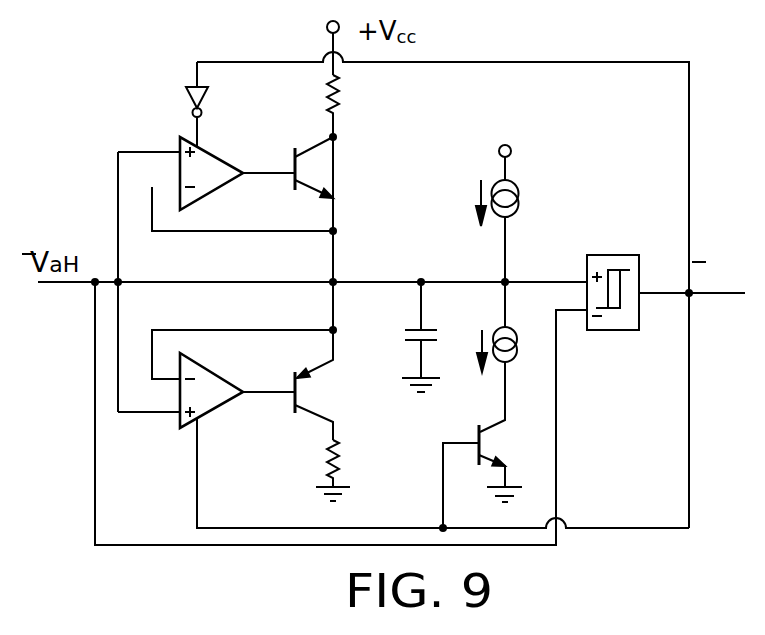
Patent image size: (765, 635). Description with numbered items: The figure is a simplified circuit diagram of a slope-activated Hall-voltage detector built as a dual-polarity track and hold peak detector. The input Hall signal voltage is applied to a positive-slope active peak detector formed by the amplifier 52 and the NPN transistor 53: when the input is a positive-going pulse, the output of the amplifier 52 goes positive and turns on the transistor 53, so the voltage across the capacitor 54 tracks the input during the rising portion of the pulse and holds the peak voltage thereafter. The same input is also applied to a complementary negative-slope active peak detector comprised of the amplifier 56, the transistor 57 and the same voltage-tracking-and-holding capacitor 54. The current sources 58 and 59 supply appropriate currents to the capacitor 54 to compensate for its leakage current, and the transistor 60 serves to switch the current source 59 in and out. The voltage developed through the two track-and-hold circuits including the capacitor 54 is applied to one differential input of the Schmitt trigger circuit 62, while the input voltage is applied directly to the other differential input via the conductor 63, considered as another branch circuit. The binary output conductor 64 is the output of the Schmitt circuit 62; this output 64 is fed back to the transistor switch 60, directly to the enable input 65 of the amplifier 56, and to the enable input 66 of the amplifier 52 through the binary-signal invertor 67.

The amplifier 52 is at (215, 165).
The NPN transistor 53 is at (297, 160).
The capacitor 54 is at (405, 333).
The amplifier 56 is at (215, 388).
The transistor 57 is at (297, 393).
The current source 58 is at (520, 197).
The current source 59 is at (535, 318).
The transistor 60 is at (485, 442).
The Schmitt trigger circuit 62 is at (605, 262).
The conductor 63 is at (557, 398).
The binary output conductor 64 is at (710, 296).
The enable input 65 is at (197, 448).
The enable input 66 is at (197, 126).
The binary-signal invertor 67 is at (190, 97).